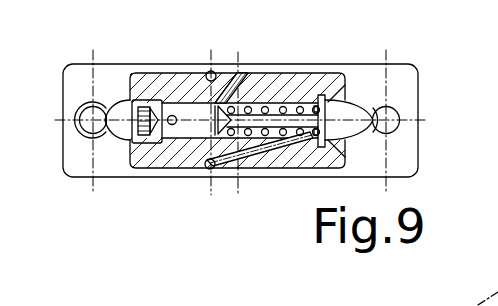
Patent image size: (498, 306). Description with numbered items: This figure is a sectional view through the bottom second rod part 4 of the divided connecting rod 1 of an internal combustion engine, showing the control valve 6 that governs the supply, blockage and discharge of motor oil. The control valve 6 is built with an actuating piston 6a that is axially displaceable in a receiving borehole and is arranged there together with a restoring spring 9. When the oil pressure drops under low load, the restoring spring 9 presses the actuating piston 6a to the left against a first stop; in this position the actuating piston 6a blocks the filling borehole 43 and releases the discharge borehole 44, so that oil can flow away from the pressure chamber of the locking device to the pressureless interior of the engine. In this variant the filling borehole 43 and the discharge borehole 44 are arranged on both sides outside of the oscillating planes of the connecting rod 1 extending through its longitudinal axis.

The connecting rod 1 is at (366, 56).
The second rod part 4 is at (293, 73).
The control valve 6 is at (173, 75).
The actuating piston 6a is at (183, 147).
The restoring spring 9 is at (264, 107).
The filling borehole 43 is at (212, 71).
The discharge borehole 44 is at (212, 169).